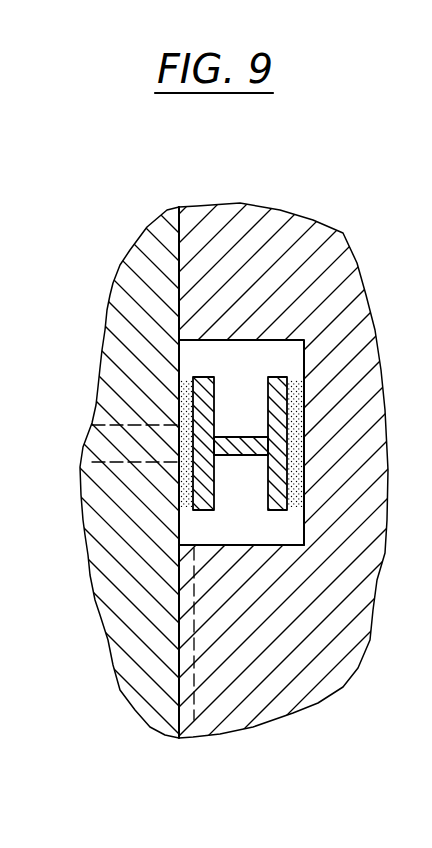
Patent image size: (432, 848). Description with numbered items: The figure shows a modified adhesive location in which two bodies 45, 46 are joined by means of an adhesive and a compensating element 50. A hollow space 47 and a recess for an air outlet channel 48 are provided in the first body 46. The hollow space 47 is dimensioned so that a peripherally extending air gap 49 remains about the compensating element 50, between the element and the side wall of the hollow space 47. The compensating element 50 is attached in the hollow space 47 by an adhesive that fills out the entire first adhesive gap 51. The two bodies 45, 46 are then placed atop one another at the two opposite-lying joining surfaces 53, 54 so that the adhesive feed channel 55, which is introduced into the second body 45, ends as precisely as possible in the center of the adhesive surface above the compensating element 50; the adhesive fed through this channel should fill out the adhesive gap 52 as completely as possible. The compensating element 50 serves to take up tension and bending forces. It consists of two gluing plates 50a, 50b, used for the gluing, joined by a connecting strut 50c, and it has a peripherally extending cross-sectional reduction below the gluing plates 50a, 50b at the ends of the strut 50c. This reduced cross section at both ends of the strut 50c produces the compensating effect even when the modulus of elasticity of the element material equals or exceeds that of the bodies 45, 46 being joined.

The second body 45 is at (132, 260).
The first body 46 is at (337, 243).
The hollow space 47 is at (294, 357).
The air outlet channel 48 is at (191, 683).
The air gap 49 is at (294, 524).
The compensating element 50 is at (177, 438).
The gluing plate 50a is at (197, 511).
The gluing plate 50b is at (282, 376).
The connecting strut 50c is at (243, 456).
The first adhesive gap 51 is at (295, 406).
The adhesive gap 52 is at (186, 404).
The joining surface 53 is at (176, 264).
The joining surface 54 is at (183, 243).
The adhesive feed channel 55 is at (112, 461).